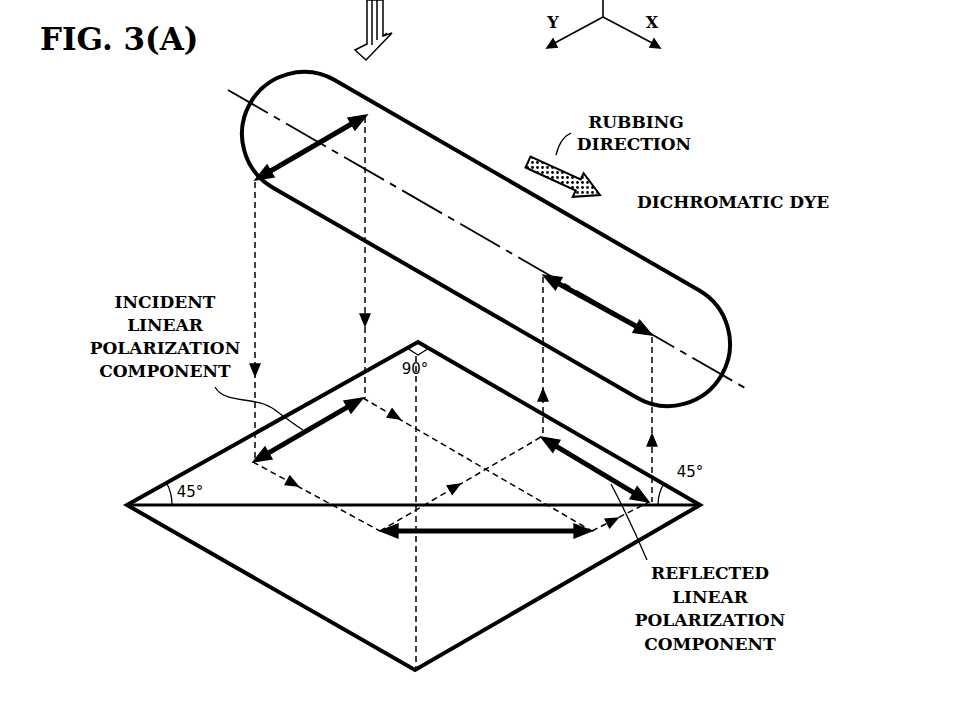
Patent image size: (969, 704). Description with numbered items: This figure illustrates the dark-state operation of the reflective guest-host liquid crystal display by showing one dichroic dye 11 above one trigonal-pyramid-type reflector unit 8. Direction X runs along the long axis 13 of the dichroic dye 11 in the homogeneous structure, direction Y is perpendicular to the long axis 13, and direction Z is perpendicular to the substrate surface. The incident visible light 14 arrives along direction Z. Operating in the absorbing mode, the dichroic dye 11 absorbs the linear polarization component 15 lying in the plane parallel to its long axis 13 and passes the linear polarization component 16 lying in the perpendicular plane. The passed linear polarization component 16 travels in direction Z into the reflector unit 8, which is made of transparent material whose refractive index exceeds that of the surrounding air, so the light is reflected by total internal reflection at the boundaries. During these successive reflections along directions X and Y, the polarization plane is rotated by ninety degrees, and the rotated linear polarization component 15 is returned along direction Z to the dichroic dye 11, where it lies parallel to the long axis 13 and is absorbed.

The reflector unit 8 is at (545, 598).
The dichroic dye 11 is at (598, 243).
The long axis 13 is at (727, 373).
The incident visible light 14 is at (378, 25).
The linear polarization component 15 is at (595, 300).
The linear polarization component 16 is at (330, 135).